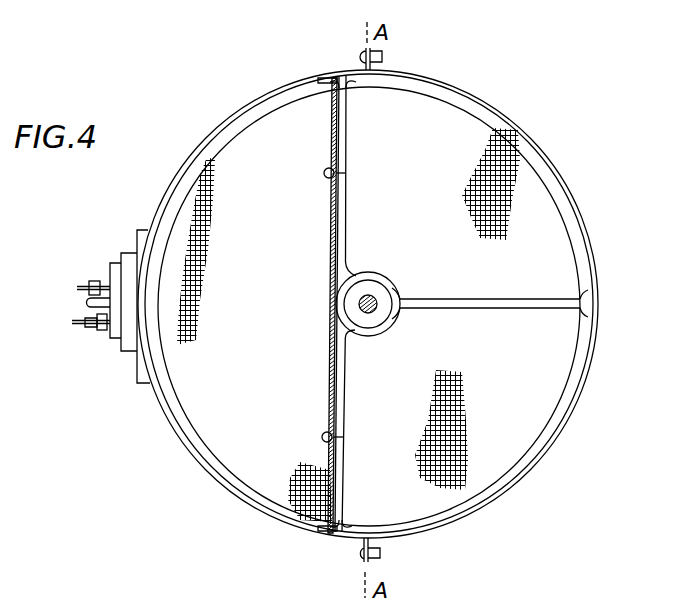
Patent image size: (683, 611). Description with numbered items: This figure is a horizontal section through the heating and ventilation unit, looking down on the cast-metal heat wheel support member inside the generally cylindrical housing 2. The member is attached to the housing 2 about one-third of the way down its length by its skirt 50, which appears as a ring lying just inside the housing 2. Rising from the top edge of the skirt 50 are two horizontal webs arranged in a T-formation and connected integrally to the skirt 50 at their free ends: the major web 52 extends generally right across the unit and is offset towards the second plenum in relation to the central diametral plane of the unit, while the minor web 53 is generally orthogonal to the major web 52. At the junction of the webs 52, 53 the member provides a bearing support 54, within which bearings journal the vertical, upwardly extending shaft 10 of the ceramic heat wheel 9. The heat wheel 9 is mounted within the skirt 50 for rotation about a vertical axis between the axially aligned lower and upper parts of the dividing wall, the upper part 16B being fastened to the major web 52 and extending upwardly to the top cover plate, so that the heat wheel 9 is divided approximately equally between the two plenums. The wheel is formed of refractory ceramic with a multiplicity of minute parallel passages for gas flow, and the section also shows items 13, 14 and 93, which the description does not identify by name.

The housing 2 is at (545, 143).
The ceramic heat wheel 9 is at (258, 373).
The shaft 10 is at (373, 308).
The connector terminal 13 is at (87, 302).
The terminal leads 14 is at (80, 287).
The upper part of the dividing wall 16B is at (330, 259).
The skirt 50 is at (228, 477).
The major web 52 is at (338, 396).
The minor web 53 is at (450, 306).
The bearing support 54 is at (382, 282).
The compartment 93 is at (437, 118).